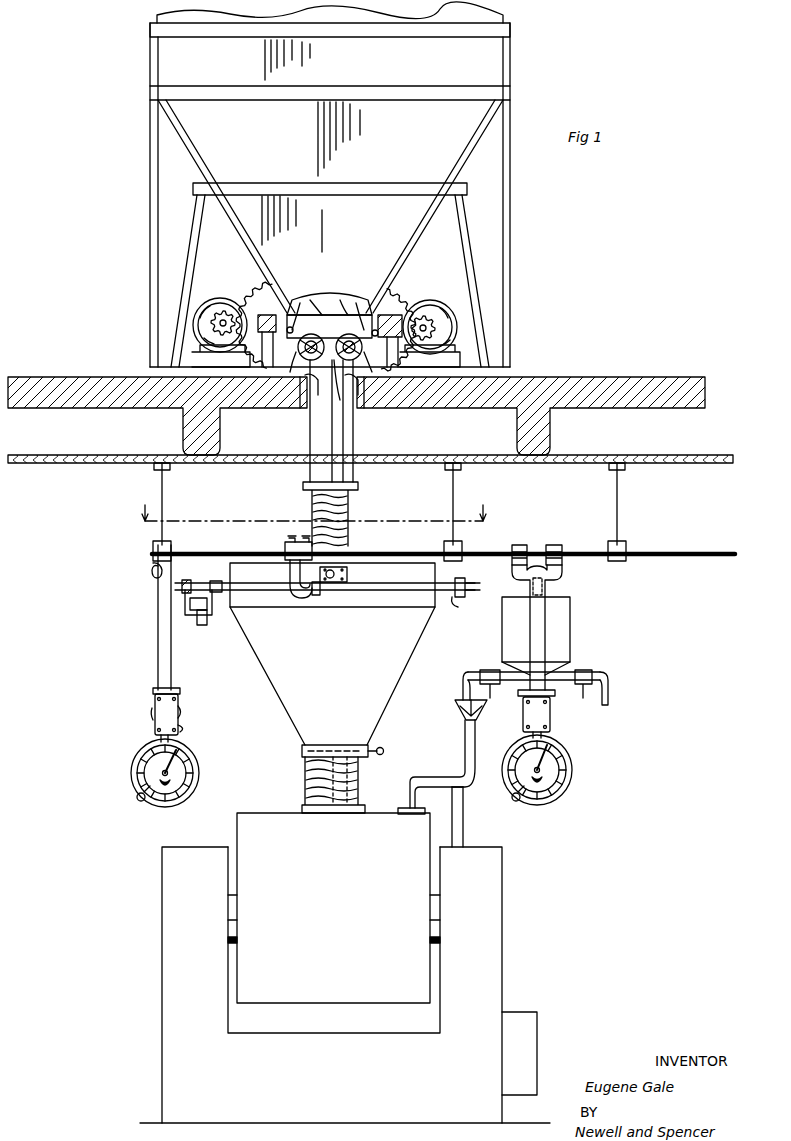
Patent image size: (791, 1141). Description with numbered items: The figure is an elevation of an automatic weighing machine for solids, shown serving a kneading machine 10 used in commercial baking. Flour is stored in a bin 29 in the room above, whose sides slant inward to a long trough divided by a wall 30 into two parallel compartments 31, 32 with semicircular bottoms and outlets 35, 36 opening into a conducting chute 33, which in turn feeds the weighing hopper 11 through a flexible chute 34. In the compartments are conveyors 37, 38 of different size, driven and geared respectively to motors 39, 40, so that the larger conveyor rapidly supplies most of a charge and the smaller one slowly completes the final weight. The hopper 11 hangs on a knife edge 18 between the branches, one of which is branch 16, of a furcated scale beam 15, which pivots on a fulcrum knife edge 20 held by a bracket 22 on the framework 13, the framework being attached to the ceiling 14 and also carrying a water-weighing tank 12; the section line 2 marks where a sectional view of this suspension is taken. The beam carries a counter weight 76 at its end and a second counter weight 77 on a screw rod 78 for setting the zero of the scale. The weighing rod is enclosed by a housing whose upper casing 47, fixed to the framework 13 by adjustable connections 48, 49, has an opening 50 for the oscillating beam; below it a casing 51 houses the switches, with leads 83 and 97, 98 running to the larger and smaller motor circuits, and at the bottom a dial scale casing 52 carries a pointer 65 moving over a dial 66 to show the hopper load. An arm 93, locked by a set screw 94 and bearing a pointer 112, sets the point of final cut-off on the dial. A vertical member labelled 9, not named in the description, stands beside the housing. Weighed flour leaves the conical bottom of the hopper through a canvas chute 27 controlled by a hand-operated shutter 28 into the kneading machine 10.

The section line 2- 2 is at (295, 517).
The supply pipe 9 is at (146, 549).
The kneading machine 10 is at (345, 968).
The weighing hopper 11 is at (384, 693).
The tank 12 is at (573, 628).
The framework 13 is at (160, 485).
The ceiling 14 is at (78, 455).
The scale beam 15 is at (178, 588).
The branch of scale beam 16 is at (427, 605).
The knife edge 18 is at (348, 573).
The knife edge 20 is at (322, 598).
The bracket 22 is at (284, 546).
The chute 27 is at (359, 790).
The valve or shutter 28 is at (383, 749).
The bin 29 is at (486, 67).
The wall 30 is at (330, 296).
The compartment 31 is at (310, 300).
The compartment 32 is at (360, 300).
The conducting chute 33 is at (310, 427).
The flexible chute 34 is at (355, 515).
The outlet 35 is at (306, 402).
The outlet 36 is at (354, 426).
The conveyor 37 is at (292, 370).
The conveyor 38 is at (374, 372).
The motor 39 is at (232, 290).
The motor 40 is at (436, 295).
The upper casing 47 is at (158, 663).
The bracket 48 is at (512, 543).
The bracket 49 is at (152, 570).
The opening 50 is at (548, 576).
The casing 51 is at (182, 730).
The dial scale casing 52 is at (195, 790).
The pointer 65 is at (178, 756).
The dial scale 66 is at (198, 770).
The counter weight 76 is at (462, 605).
The second counter weight 77 is at (207, 618).
The screw rod 78 is at (198, 628).
The lead 83 is at (154, 719).
The arm 93 is at (137, 800).
The set screw 94 is at (142, 794).
The lead 97 is at (152, 710).
The lead 98 is at (180, 706).
The pointer 112 is at (149, 800).